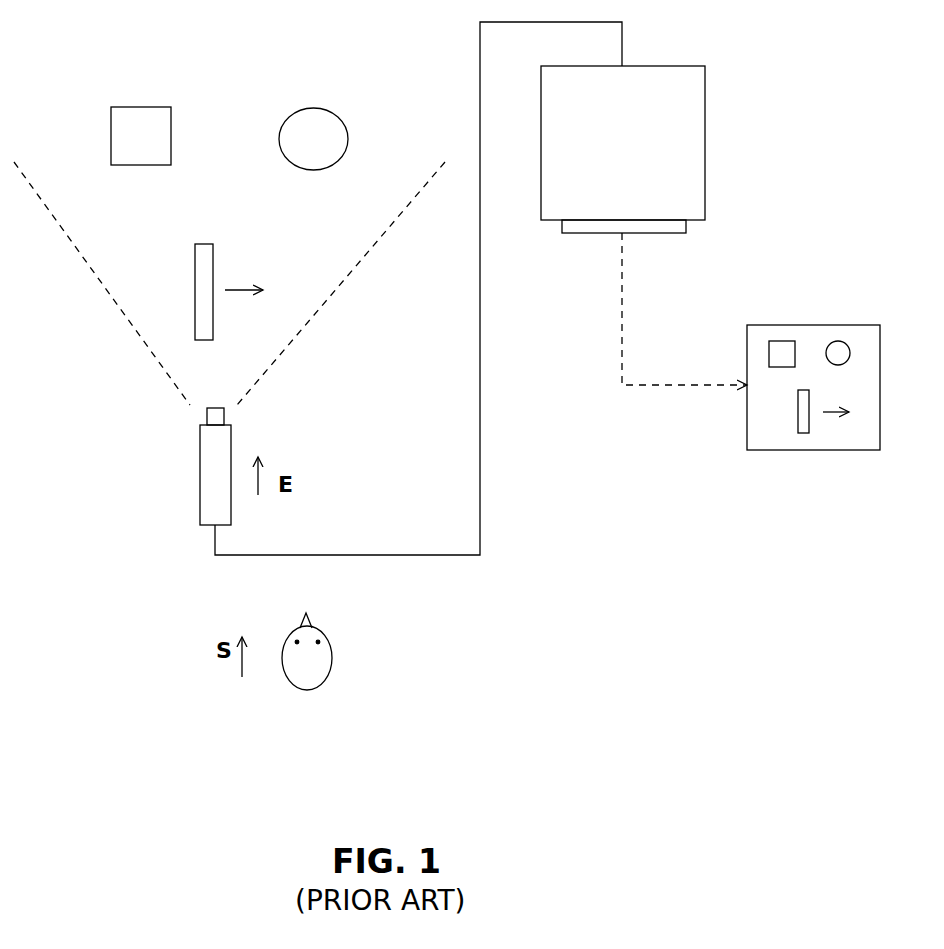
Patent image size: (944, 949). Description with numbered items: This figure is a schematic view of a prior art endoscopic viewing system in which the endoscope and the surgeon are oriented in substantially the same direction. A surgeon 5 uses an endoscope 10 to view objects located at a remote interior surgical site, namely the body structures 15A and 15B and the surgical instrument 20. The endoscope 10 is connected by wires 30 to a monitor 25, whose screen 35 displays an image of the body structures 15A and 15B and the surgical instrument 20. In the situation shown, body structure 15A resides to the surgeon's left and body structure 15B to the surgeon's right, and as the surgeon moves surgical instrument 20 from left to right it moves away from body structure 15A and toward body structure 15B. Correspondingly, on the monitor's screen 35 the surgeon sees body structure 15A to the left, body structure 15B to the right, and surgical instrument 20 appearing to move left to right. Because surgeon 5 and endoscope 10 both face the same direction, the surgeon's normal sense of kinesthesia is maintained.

The surgeon 5 is at (343, 670).
The endoscope 10 is at (191, 479).
The body structure 15A is at (182, 105).
The body structure 15B is at (343, 105).
The surgical instrument 20 is at (188, 268).
The monitor 25 is at (721, 102).
The wires 30 is at (489, 508).
The monitor's screen 35 is at (586, 253).